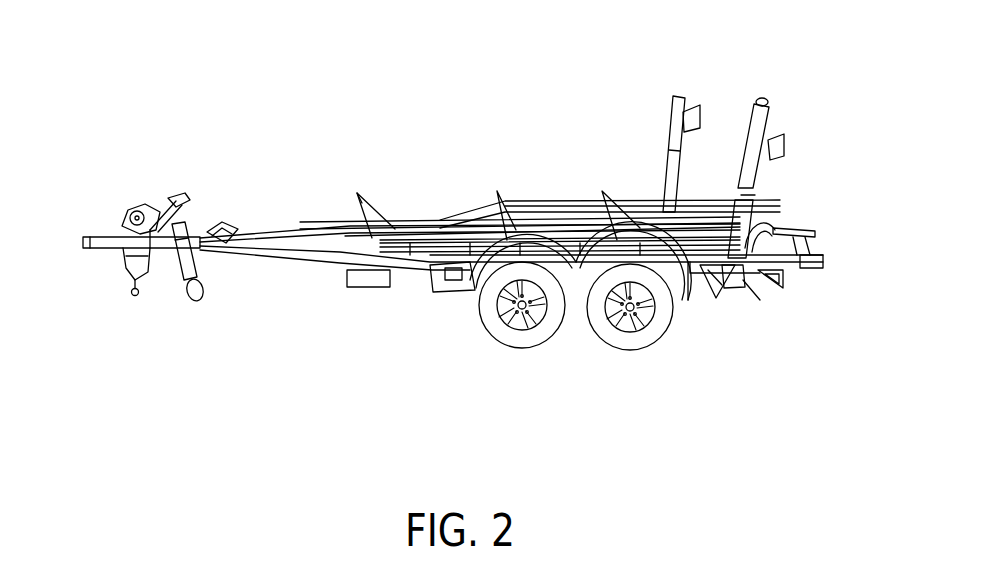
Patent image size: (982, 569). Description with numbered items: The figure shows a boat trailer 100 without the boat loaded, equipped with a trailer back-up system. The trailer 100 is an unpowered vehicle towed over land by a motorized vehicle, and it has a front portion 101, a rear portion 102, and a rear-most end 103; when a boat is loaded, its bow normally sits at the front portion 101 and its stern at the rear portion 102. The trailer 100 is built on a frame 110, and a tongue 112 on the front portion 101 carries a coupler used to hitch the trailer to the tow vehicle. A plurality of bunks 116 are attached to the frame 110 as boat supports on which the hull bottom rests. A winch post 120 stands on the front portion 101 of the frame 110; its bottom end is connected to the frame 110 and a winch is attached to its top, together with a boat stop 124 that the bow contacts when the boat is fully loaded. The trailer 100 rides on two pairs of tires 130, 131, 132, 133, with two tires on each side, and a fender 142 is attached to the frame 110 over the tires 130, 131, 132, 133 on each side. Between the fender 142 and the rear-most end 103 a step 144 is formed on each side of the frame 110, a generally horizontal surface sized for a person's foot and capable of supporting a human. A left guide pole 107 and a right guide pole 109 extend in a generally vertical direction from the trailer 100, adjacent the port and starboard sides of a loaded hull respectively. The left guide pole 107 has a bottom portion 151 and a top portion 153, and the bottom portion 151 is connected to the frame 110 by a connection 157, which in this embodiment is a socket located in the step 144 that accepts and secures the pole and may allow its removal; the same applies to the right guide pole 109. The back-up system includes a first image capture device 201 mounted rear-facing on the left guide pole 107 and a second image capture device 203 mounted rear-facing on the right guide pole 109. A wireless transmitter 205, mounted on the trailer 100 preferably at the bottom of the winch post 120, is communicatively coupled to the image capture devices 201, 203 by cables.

The trailer 100 is at (297, 285).
The front portion 101 is at (215, 188).
The rear portion 102 is at (785, 304).
The rear-most end 103 is at (840, 257).
The left guide pole 107 is at (748, 186).
The right guide pole 109 is at (671, 142).
The frame 110 is at (301, 230).
The tongue 112 is at (162, 262).
The bunks 116 is at (368, 238).
The winch post 120 is at (127, 255).
The boat stop 124 is at (155, 200).
The tire 130 is at (507, 235).
The tire 131 is at (545, 330).
The tire 132 is at (612, 240).
The tire 133 is at (655, 322).
The fender 142 is at (561, 200).
The step 144 is at (705, 270).
The bottom portion 151 is at (766, 236).
The top portion 153 is at (765, 98).
The connection 157 is at (722, 262).
The first image capture device 201 is at (785, 145).
The second image capture device 203 is at (694, 110).
The wireless transmitter 205 is at (380, 283).